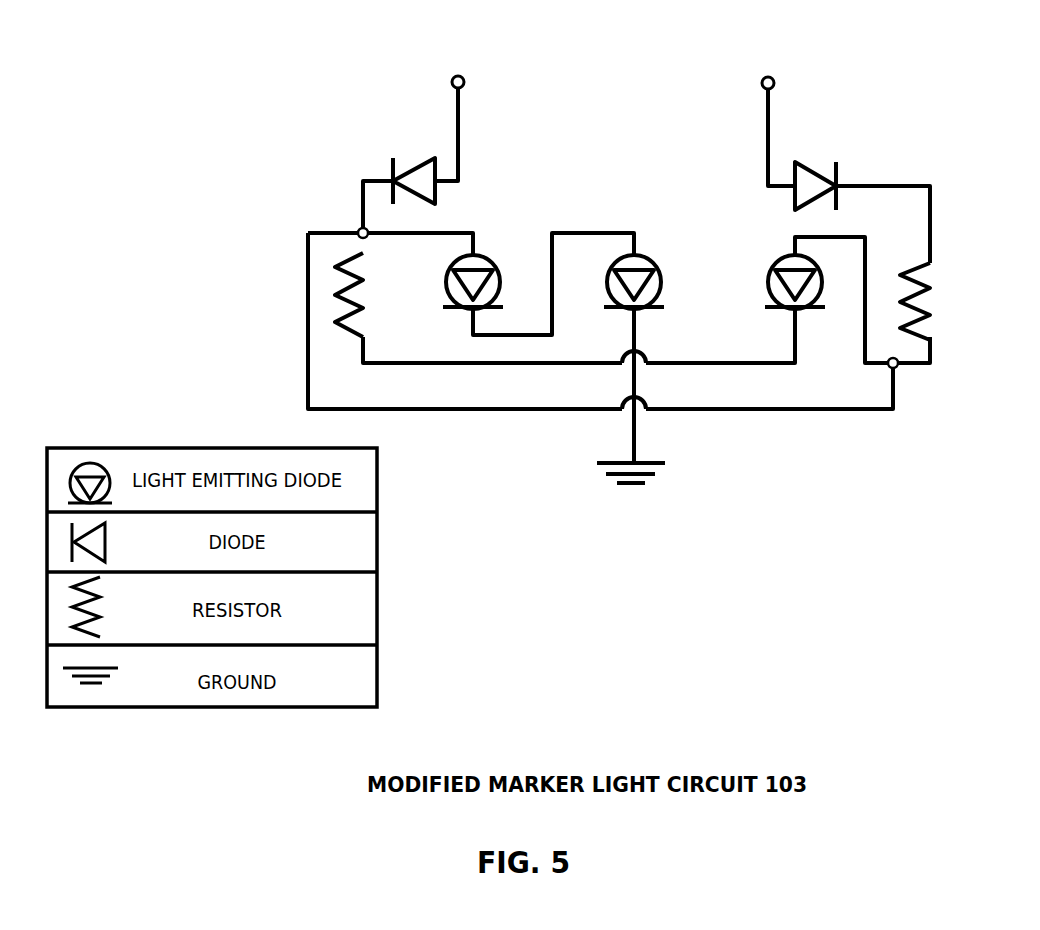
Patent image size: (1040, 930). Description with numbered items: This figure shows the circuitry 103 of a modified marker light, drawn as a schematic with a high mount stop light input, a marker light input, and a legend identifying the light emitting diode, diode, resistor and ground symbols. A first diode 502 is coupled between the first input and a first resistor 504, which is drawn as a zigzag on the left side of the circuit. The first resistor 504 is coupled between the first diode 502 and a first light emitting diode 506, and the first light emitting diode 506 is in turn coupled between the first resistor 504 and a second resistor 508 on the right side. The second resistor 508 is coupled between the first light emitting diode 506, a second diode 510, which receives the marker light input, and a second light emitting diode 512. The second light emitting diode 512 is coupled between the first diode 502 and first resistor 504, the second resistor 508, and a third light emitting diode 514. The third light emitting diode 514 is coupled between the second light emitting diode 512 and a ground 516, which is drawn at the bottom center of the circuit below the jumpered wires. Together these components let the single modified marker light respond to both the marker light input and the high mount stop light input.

The circuitry 103 is at (155, 122).
The first diode 502 is at (440, 196).
The first resistor 504 is at (363, 292).
The first light emitting diode 506 is at (768, 265).
The second resistor 508 is at (940, 292).
The second diode 510 is at (820, 161).
The second light emitting diode 512 is at (486, 255).
The third light emitting diode 514 is at (643, 256).
The ground 516 is at (668, 479).